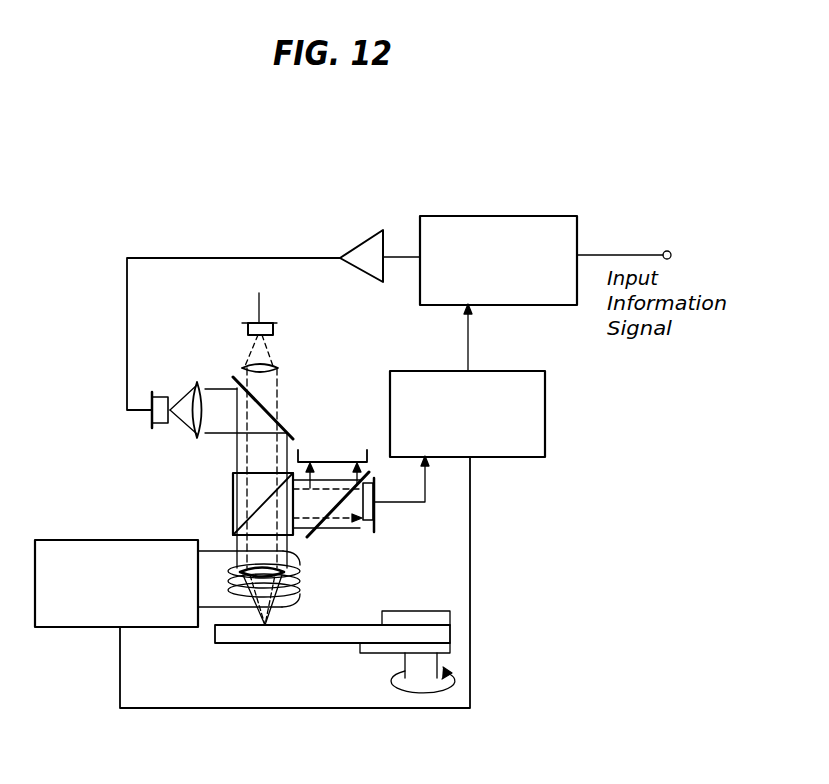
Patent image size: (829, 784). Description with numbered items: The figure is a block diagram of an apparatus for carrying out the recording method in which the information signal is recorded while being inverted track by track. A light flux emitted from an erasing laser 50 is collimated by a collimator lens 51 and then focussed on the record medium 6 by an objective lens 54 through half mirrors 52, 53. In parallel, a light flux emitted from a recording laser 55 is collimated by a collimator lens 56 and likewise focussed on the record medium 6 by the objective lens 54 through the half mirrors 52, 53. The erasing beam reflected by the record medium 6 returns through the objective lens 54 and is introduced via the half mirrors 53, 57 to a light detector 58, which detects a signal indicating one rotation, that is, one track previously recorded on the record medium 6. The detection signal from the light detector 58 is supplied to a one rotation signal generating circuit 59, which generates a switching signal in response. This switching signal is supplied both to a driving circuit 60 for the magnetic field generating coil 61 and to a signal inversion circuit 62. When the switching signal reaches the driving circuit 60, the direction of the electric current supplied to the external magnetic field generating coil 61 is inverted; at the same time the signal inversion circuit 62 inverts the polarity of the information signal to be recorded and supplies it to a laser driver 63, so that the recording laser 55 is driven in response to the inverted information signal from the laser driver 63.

The record medium 6 is at (312, 636).
The erasing laser 50 is at (278, 323).
The collimator lens 51 is at (280, 369).
The half mirror 52 is at (285, 427).
The half mirror 53 is at (253, 511).
The objective lens 54 is at (293, 571).
The recording laser 55 is at (158, 395).
The collimator lens 56 is at (197, 432).
The half mirror 57 is at (332, 516).
The light detector 58 is at (377, 517).
The one rotation signal generating circuit 59 is at (523, 460).
The driving circuit 60 is at (105, 541).
The magnetic field generating coil 61 is at (298, 598).
The signal inversion circuit 62 is at (497, 222).
The laser driver 63 is at (374, 240).